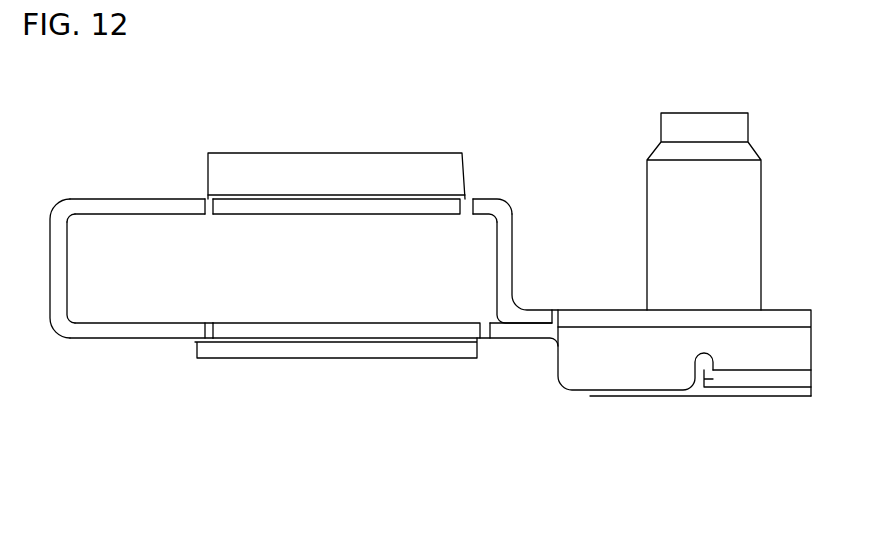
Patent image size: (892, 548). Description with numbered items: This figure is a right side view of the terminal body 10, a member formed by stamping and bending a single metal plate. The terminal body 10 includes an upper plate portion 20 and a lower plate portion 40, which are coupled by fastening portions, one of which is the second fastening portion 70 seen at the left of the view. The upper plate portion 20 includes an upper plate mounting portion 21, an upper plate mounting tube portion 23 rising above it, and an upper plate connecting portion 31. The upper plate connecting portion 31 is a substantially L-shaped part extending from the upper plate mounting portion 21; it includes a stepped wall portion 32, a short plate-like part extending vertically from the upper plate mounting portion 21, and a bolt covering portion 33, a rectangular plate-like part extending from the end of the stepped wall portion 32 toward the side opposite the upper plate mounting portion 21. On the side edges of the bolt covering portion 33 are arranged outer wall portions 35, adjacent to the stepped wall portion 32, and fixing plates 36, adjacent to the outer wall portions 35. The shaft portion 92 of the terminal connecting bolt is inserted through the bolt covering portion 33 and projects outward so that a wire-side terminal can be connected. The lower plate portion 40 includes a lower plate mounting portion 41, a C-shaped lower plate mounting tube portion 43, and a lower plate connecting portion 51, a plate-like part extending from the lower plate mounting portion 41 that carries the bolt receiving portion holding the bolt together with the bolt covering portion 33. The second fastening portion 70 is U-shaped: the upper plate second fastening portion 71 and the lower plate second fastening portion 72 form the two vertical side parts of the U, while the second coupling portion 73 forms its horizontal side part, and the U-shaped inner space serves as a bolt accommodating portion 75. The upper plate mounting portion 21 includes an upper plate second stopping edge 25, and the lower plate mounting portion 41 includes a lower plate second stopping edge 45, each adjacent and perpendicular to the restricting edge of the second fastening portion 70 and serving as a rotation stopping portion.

The terminal body 10 is at (188, 468).
The upper plate portion 20 is at (548, 82).
The upper plate mounting portion 21 is at (358, 207).
The upper plate mounting tube portion 23 is at (430, 175).
The upper plate second stopping edge 25 is at (202, 206).
The upper plate connecting portion 31 is at (591, 266).
The stepped wall portion 32 is at (505, 258).
The bolt covering portion 33 is at (790, 313).
The outer wall portion 35 is at (642, 357).
The fixing plate 36 is at (778, 353).
The lower plate portion 40 is at (562, 488).
The lower plate mounting portion 41 is at (418, 328).
The lower plate mounting tube portion 43 is at (373, 353).
The lower plate second stopping edge 45 is at (202, 332).
The lower plate connecting portion 51 is at (602, 410).
The second fastening portion 70 is at (73, 360).
The upper plate second fastening portion 71 is at (133, 207).
The lower plate second fastening portion 72 is at (137, 330).
The second coupling portion 73 is at (57, 252).
The bolt accommodating portion 75 is at (100, 227).
The shaft portion 92 is at (747, 190).